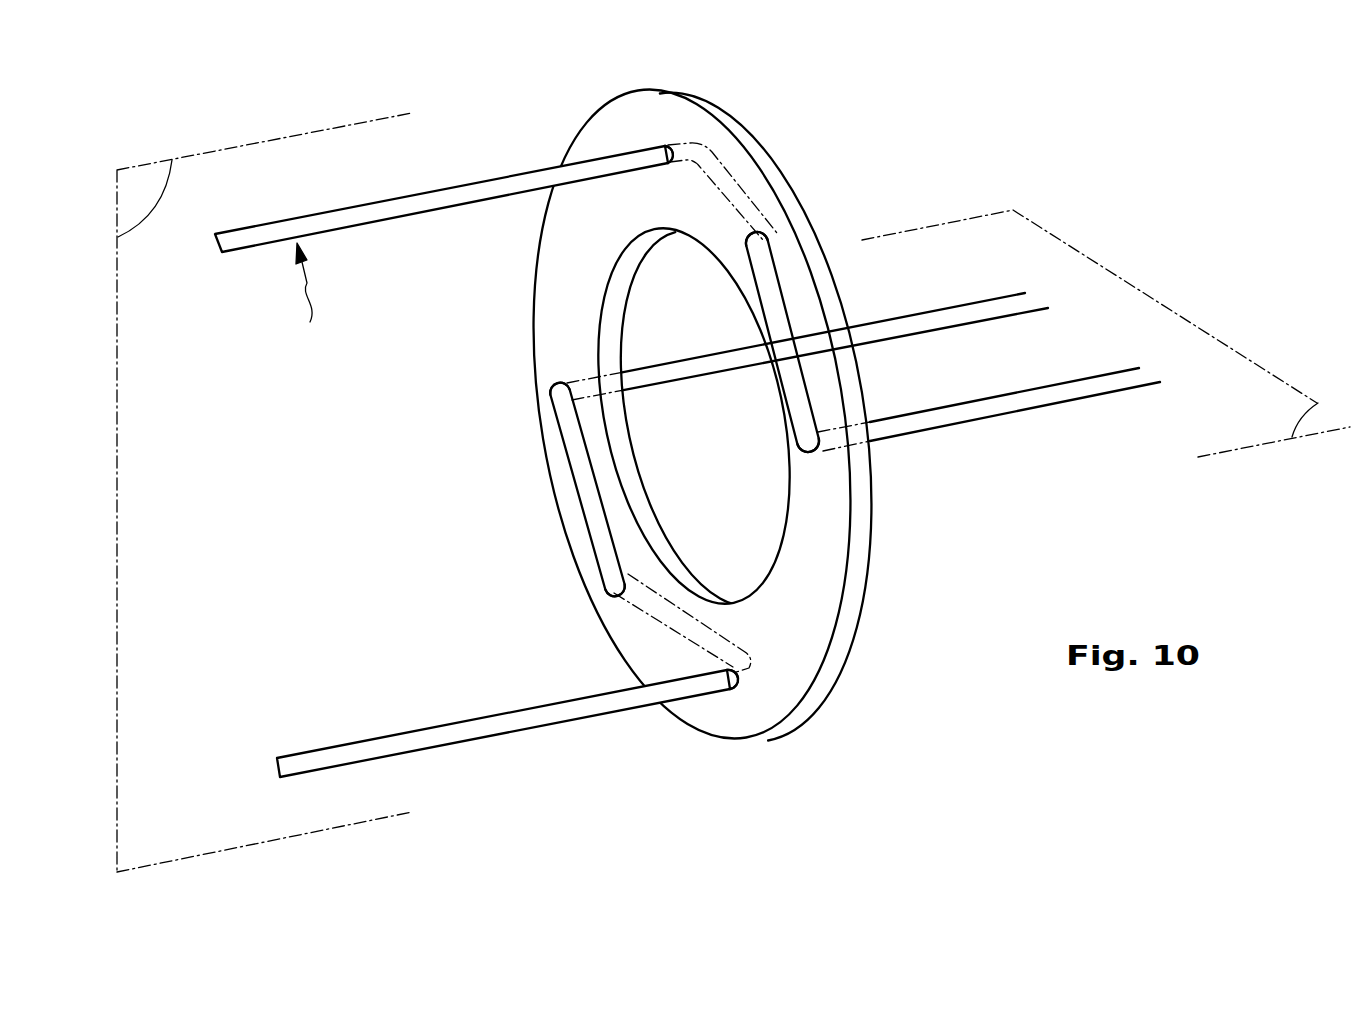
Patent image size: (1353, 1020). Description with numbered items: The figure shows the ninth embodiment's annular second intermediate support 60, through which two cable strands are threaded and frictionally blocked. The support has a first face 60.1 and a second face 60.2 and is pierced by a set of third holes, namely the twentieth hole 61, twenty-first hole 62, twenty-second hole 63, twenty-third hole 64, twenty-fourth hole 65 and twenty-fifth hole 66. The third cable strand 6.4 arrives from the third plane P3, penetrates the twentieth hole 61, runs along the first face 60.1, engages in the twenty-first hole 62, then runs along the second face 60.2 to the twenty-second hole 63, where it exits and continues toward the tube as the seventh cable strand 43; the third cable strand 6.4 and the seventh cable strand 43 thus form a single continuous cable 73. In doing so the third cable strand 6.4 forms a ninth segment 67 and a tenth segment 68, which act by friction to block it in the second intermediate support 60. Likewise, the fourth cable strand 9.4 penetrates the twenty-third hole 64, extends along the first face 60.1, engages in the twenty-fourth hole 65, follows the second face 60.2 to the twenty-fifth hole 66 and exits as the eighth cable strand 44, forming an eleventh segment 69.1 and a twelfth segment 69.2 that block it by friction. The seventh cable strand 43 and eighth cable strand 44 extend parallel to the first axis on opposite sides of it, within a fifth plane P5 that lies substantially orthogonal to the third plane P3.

The second intermediate support 60 is at (683, 728).
The first face 60.1 is at (836, 692).
The second face 60.2 is at (548, 298).
The twentieth hole 61 is at (668, 150).
The twenty-first hole 62 is at (770, 240).
The twenty-second hole 63 is at (822, 442).
The twenty-third hole 64 is at (733, 690).
The twenty-fourth hole 65 is at (617, 591).
The twenty-fifth hole 66 is at (550, 398).
The ninth segment 67 is at (737, 186).
The tenth segment 68 is at (765, 305).
The eleventh segment 69.1 is at (733, 633).
The twelfth segment 69.2 is at (583, 488).
The third cable strand 6.4 is at (413, 207).
The fourth cable strand 9.4 is at (340, 752).
The seventh cable strand 43 is at (1105, 380).
The eighth cable strand 44 is at (952, 313).
The single continuous cable 73 is at (313, 298).
The third plane P3 is at (148, 187).
The fifth plane P5 is at (1330, 418).